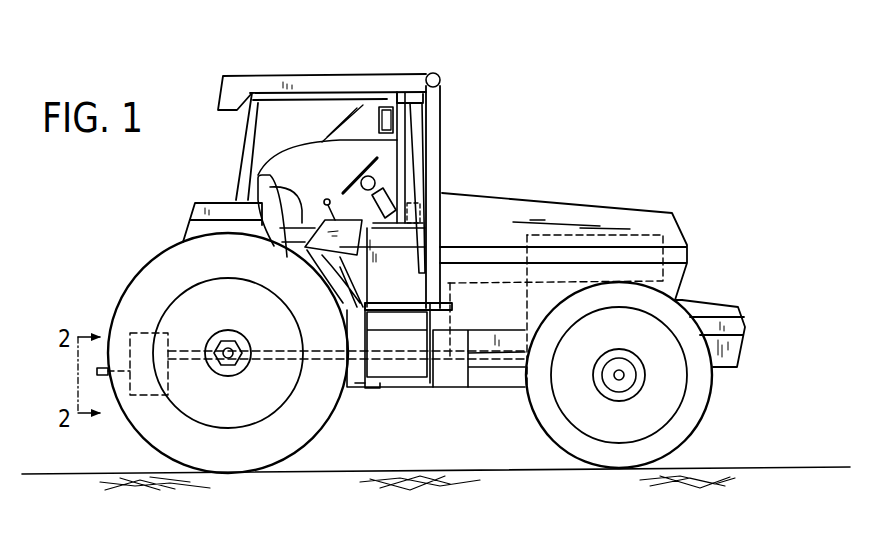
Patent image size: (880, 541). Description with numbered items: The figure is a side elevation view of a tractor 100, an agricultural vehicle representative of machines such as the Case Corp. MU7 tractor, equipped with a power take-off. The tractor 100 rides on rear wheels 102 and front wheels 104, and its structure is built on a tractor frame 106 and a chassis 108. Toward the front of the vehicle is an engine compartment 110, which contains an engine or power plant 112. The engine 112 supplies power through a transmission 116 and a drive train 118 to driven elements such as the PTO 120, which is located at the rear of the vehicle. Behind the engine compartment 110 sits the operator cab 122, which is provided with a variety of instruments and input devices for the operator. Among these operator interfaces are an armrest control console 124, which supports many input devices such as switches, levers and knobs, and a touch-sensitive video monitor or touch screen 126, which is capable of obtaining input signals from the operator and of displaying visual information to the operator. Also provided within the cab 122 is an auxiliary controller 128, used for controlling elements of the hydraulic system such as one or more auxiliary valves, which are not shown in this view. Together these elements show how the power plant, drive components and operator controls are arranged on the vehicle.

The tractor 100 is at (490, 138).
The rear wheels 102 is at (290, 462).
The front wheels 104 is at (612, 470).
The tractor frame 106 is at (447, 390).
The chassis 108 is at (383, 388).
The engine compartment 110 is at (583, 213).
The engine or power plant 112 is at (655, 235).
The transmission 116 is at (507, 372).
The drive train 118 is at (278, 360).
The PTO 120 is at (102, 367).
The operator cab 122 is at (326, 75).
The armrest control console 124 is at (262, 182).
The touch-sensitive video monitor 126 is at (386, 103).
The auxiliary controller 128 is at (326, 199).